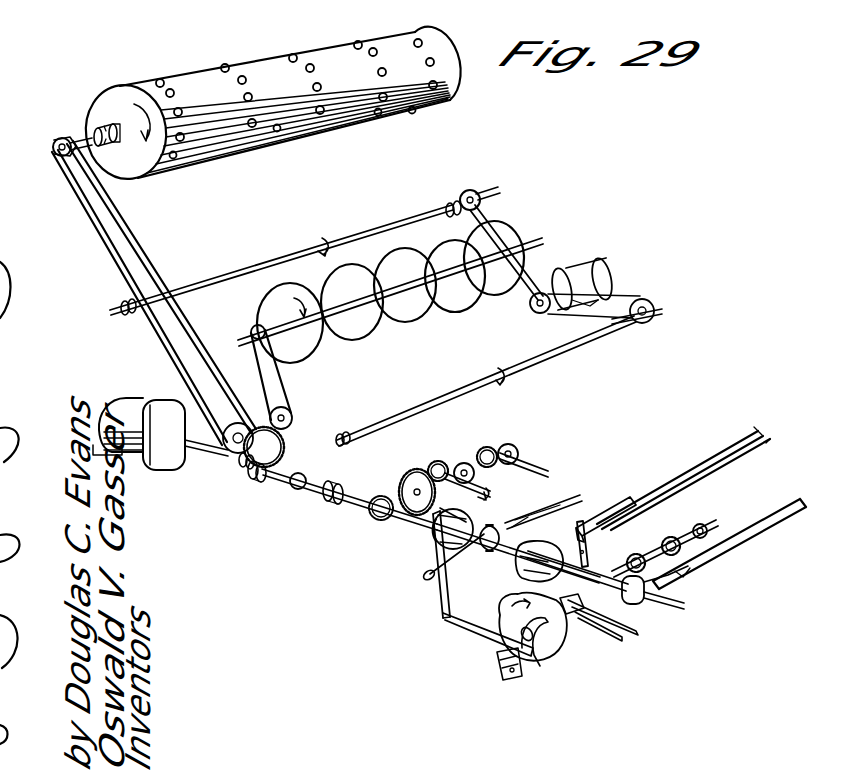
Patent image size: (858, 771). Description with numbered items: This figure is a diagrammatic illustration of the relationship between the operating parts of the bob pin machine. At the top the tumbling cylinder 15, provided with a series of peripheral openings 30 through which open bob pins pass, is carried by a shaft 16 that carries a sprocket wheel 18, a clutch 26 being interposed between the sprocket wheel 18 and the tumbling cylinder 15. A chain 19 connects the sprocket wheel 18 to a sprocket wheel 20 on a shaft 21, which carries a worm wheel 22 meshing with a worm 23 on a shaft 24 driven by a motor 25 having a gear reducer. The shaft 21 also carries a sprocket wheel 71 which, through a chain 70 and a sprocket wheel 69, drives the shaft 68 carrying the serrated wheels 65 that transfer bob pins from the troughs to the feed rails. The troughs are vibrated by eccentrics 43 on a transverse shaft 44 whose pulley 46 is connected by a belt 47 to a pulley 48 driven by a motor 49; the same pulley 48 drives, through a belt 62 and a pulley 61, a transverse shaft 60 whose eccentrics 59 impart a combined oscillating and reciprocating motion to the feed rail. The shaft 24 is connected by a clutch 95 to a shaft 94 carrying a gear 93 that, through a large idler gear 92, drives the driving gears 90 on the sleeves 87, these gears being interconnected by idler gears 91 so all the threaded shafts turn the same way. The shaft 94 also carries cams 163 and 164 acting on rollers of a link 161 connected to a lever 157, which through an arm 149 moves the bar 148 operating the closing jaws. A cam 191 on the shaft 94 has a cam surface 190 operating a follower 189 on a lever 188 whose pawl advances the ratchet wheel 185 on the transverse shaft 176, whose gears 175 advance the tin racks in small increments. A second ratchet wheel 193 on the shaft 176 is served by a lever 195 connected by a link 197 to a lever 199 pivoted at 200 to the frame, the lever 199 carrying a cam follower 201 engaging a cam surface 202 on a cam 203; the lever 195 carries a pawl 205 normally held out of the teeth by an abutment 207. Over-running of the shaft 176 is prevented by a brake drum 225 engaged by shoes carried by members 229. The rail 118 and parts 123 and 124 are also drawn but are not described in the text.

The tumbling cylinder 15 is at (266, 63).
The peripheral openings 30 is at (172, 90).
The shaft 16 is at (82, 139).
The sprocket wheel 18 is at (54, 143).
The clutch 26 is at (103, 125).
The chain 19 is at (110, 232).
The sprocket wheel 20 is at (226, 433).
The shaft 21 is at (240, 463).
The worm wheel 22 is at (283, 446).
The worm 23 is at (250, 480).
The shaft 24 is at (272, 483).
The motor 25 is at (147, 405).
The eccentrics 43 is at (123, 302).
The transverse shaft 44 is at (291, 256).
The pulley 46 is at (478, 192).
The belt 47 is at (540, 268).
The pulley 48 is at (532, 312).
The motor 49 is at (587, 263).
The eccentrics 59 is at (654, 302).
The transverse shaft 60 is at (542, 356).
The pulley 61 is at (662, 315).
The belt 62 is at (622, 302).
The serrated wheels 65 is at (262, 302).
The shaft 68 is at (343, 312).
The sprocket wheel 69 is at (251, 330).
The chain 70 is at (288, 393).
The sprocket wheel 71 is at (293, 416).
The sleeves 87 is at (538, 474).
The driving gears 90 is at (439, 461).
The idler gears 91 is at (464, 462).
The large idler gear 92 is at (406, 476).
The gear 93 is at (372, 520).
The shaft 94 is at (420, 530).
The clutch 95 is at (330, 483).
The rail 118 is at (716, 562).
The bearing 123 is at (664, 592).
The shaft 124 is at (685, 606).
The bar 148 is at (662, 480).
The arm 149 is at (602, 508).
The lever 157 is at (588, 562).
The link 161 is at (578, 541).
The cam 163 is at (514, 570).
The cam 164 is at (526, 586).
The gears 175 is at (671, 544).
The transverse shaft 176 is at (708, 522).
The ratchet wheel 185 is at (638, 630).
The lever 188 is at (560, 530).
The follower 189 is at (548, 518).
The cam surface 190 is at (470, 552).
The cam 191 is at (518, 532).
The second ratchet wheel 193 is at (558, 648).
The lever 195 is at (540, 668).
The link 197 is at (464, 630).
The lever 199 is at (437, 610).
The pivot 200 is at (424, 579).
The cam follower 201 is at (436, 555).
The cam surface 202 is at (437, 527).
The cam 203 is at (438, 592).
The pawl 205 is at (497, 664).
The abutment 207 is at (504, 678).
The drum 225 is at (576, 622).
The members 229 is at (624, 638).